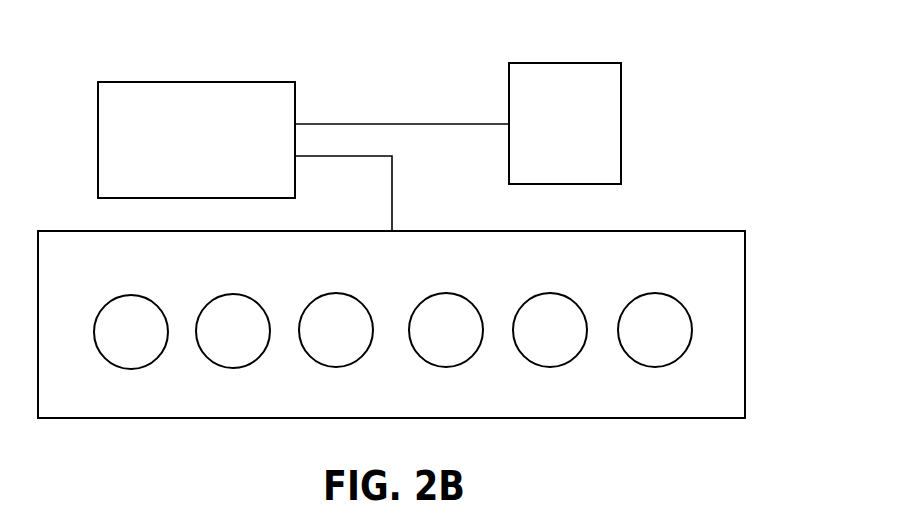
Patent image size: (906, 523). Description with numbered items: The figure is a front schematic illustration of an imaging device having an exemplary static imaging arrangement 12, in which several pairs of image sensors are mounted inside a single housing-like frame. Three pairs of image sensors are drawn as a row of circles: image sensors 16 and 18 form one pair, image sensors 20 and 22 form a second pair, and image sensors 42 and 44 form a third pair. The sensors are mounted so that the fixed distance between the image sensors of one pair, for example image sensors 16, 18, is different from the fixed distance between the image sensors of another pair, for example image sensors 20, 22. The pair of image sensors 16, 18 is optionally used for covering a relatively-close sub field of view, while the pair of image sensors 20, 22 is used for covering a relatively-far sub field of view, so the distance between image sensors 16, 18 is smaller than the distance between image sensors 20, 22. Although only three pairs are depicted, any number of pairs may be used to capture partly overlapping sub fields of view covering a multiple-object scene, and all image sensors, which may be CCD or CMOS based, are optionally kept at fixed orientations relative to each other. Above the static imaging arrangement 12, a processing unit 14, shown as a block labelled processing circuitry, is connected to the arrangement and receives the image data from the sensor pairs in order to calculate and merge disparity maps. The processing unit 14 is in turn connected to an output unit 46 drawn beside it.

The static imaging arrangement 12 is at (745, 315).
The processing unit 14 is at (162, 82).
The image sensor 16 is at (360, 300).
The image sensor 18 is at (475, 302).
The image sensor 20 is at (257, 302).
The image sensor 22 is at (578, 302).
The image sensor 42 is at (158, 305).
The image sensor 44 is at (685, 305).
The output unit 46 is at (590, 63).